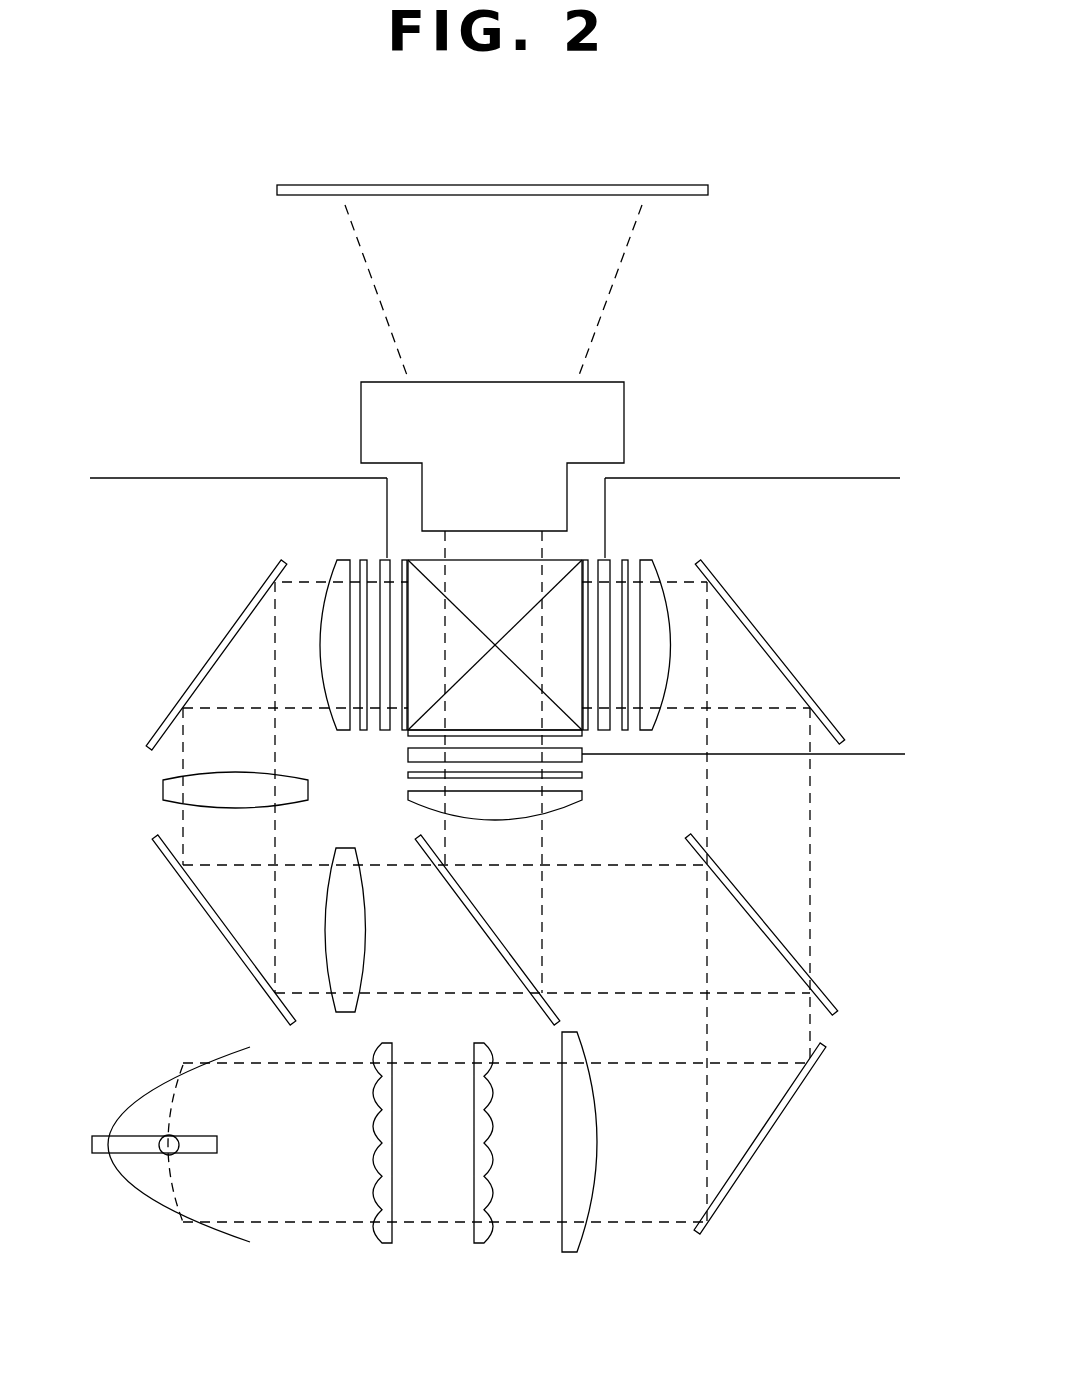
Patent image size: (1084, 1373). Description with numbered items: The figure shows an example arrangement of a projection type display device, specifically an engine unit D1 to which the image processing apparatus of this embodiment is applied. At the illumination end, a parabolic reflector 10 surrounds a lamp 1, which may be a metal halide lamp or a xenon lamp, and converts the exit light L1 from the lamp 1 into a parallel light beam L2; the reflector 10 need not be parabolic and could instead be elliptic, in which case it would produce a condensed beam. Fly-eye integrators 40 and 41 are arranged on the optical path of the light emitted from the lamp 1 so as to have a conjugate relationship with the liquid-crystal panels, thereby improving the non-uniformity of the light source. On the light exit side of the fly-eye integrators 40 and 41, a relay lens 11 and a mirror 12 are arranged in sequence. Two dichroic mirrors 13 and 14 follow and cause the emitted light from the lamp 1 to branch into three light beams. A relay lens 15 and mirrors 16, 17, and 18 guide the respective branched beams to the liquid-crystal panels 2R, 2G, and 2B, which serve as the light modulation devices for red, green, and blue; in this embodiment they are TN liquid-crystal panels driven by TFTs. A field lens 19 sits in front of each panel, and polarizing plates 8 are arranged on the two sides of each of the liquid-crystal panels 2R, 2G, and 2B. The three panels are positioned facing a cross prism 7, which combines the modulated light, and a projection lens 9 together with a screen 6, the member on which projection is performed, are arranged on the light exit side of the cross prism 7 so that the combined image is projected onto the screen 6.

The screen 6 is at (688, 185).
The projection lens 9 is at (361, 395).
The cross prism 7 is at (495, 560).
The liquid-crystal panel 2R is at (387, 558).
The liquid-crystal panel 2G is at (408, 776).
The liquid-crystal panel 2B is at (604, 558).
The polarizing plate 8 is at (362, 559).
The field lens 19 is at (330, 580).
The mirror 18 is at (218, 640).
The mirror 16 is at (768, 640).
The relay lens 15 is at (163, 790).
The mirror 17 is at (214, 928).
The dichroic mirror 14 is at (470, 893).
The dichroic mirror 13 is at (730, 878).
The mirror 12 is at (761, 1147).
The parabolic reflector 10 is at (166, 1220).
The lamp 1 is at (176, 1134).
The exit light L1 is at (183, 1205).
The parallel light beam L2 is at (296, 1224).
The fly-eye integrator 40 is at (388, 1246).
The fly-eye integrator 41 is at (479, 1246).
The relay lens 11 is at (568, 1255).
The engine unit D1 is at (800, 295).